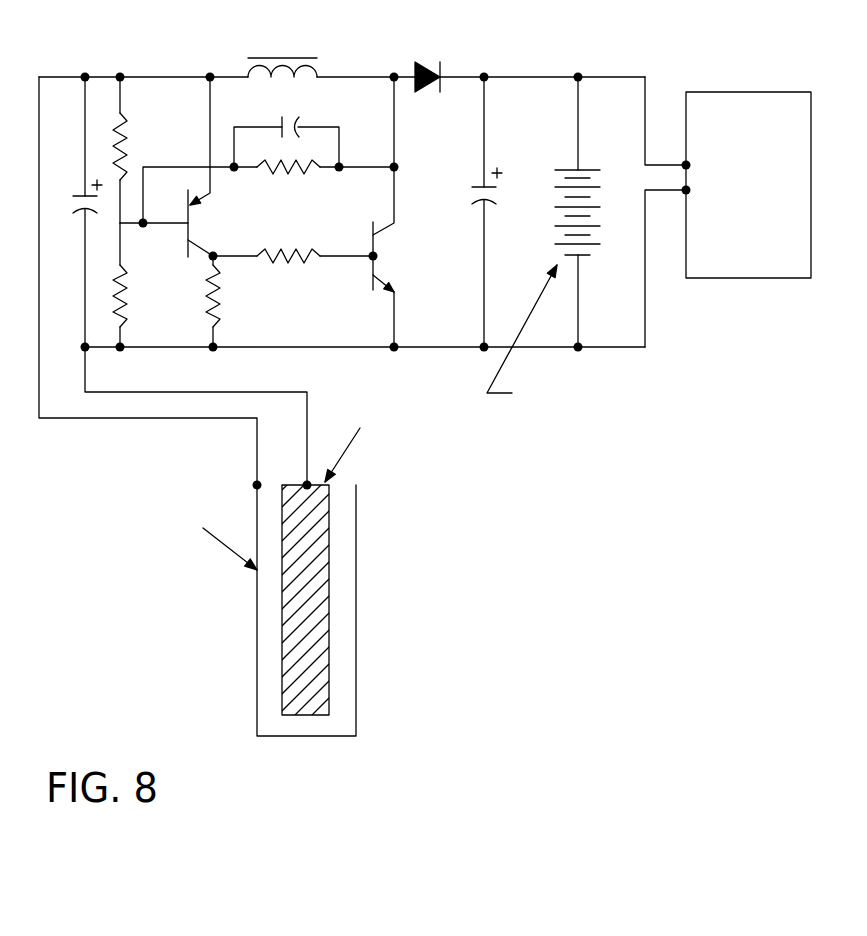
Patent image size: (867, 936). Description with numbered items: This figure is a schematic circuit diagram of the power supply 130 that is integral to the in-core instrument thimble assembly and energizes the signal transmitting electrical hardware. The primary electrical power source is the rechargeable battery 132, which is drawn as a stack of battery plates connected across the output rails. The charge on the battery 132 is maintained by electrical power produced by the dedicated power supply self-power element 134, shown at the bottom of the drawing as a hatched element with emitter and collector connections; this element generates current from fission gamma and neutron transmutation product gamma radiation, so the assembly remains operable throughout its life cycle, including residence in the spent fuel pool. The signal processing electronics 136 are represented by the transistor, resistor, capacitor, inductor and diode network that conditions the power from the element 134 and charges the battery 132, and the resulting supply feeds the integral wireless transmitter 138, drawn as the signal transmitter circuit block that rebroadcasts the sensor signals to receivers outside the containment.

The power supply 130 is at (669, 596).
The rechargeable battery 132 is at (572, 164).
The power supply self-power element 134 is at (356, 700).
The signal processing electronics 136 is at (102, 76).
The wireless transmitter 138 is at (727, 92).